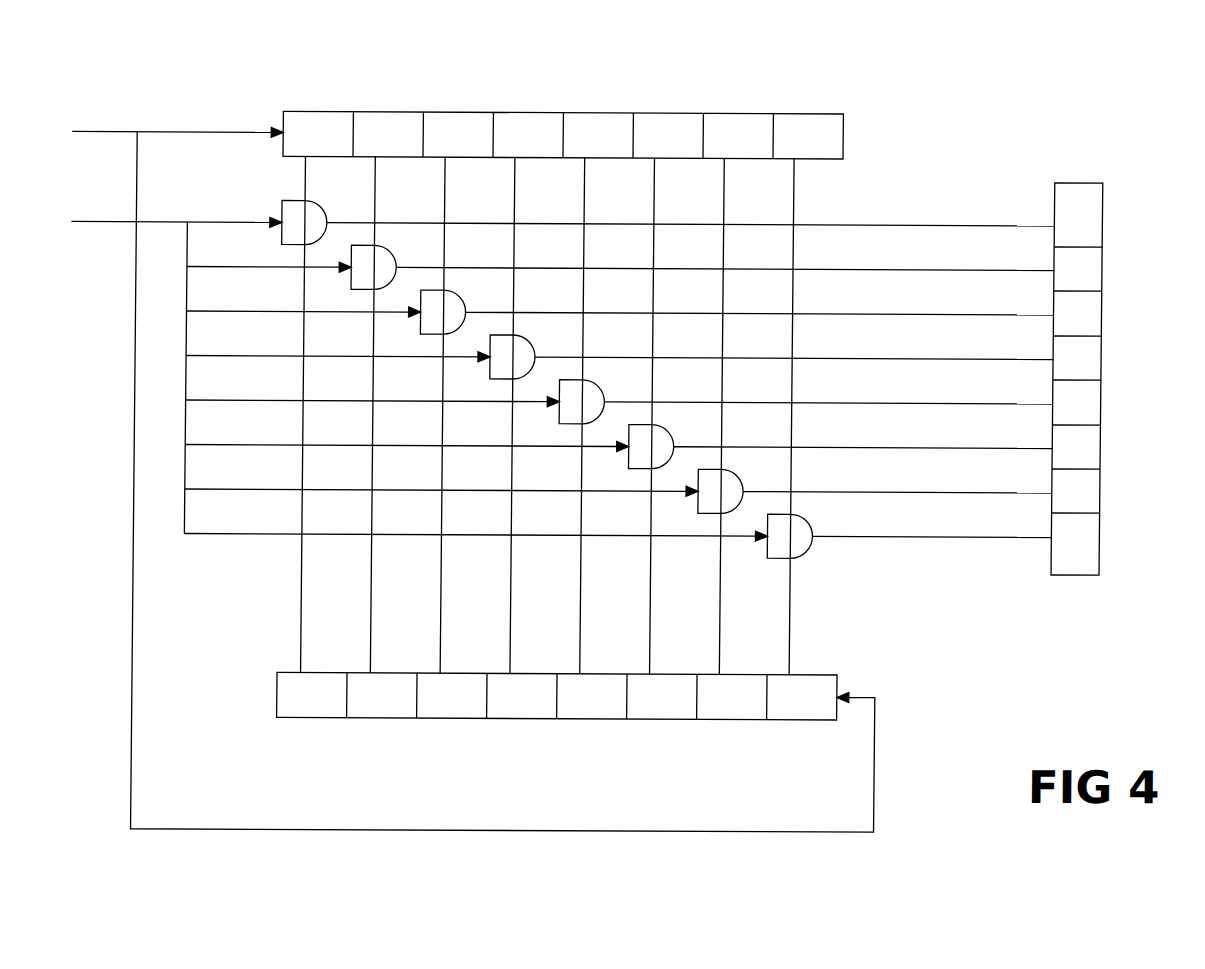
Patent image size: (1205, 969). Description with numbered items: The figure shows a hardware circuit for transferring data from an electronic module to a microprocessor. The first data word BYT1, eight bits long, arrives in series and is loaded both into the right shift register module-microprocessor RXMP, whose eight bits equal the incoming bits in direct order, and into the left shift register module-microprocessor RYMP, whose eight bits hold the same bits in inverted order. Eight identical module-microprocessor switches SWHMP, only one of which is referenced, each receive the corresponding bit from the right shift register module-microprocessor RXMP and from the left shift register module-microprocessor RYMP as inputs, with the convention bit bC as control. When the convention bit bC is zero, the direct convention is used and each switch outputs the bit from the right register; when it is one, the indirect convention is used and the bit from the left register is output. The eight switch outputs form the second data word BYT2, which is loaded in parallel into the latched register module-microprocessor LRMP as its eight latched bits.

The right shift register module-microprocessor RXMP is at (740, 111).
The left shift register module-microprocessor RYMP is at (282, 694).
The latched register module-microprocessor LRMP is at (1088, 188).
The module-microprocessor switch SWHMP is at (802, 545).
The first data word BYT1 is at (470, 458).
The second data word BYT2 is at (689, 357).
The convention bit bC is at (409, 375).